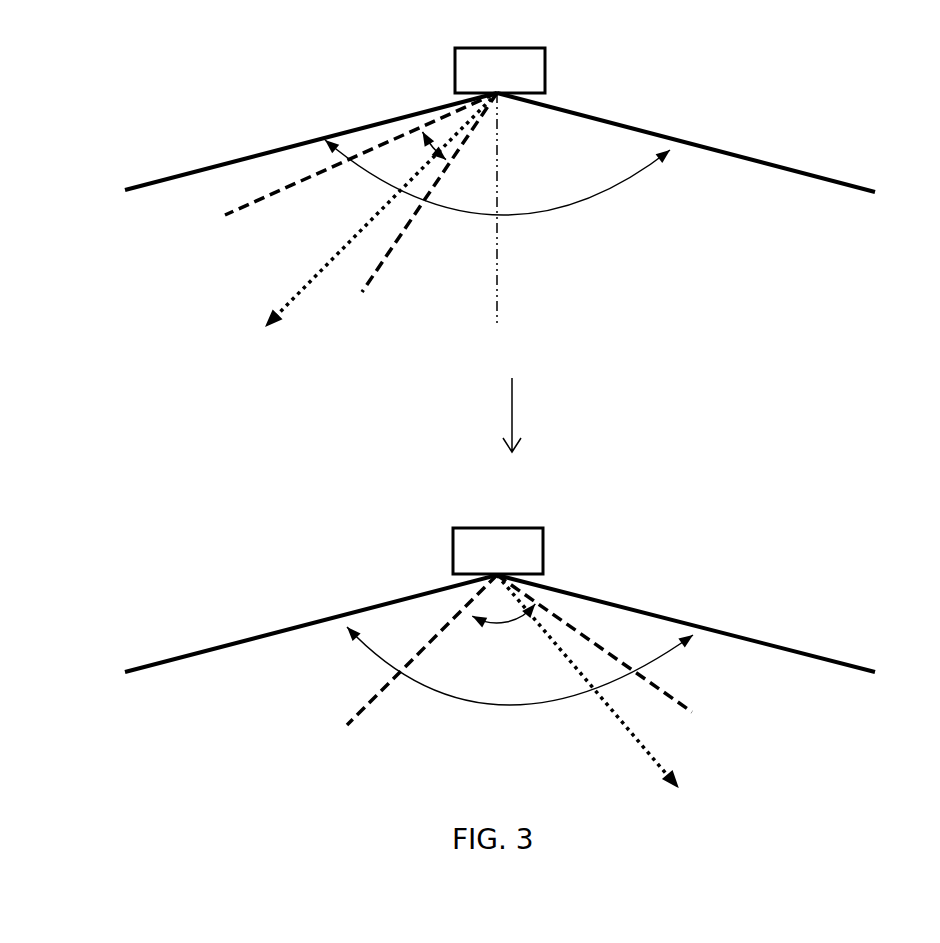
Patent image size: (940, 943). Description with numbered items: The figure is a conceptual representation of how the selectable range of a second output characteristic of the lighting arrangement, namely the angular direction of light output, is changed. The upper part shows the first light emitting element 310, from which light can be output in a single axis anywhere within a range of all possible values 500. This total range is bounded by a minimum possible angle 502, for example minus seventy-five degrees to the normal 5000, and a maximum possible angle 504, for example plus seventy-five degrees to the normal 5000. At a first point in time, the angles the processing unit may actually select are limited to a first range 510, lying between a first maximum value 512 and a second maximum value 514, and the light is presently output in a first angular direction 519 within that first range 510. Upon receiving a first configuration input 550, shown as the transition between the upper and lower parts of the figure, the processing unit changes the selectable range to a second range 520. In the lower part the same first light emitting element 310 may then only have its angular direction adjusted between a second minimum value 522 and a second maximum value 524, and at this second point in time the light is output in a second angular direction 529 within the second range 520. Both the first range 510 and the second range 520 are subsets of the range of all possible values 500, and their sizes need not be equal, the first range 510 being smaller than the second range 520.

The first light emitting element 310 is at (548, 68).
The minimum possible angle 502 is at (175, 173).
The maximum possible angle 504 is at (795, 166).
The range of all possible values 500 is at (634, 178).
The first range 510 is at (415, 160).
The first maximum value 512 is at (272, 196).
The second maximum value 514 is at (383, 258).
The first angular direction 519 is at (290, 302).
The normal 5000 is at (500, 288).
The first configuration input 550 is at (515, 410).
The second range 520 is at (500, 623).
The second minimum value 522 is at (350, 725).
The second maximum value 524 is at (692, 707).
The second angular direction 529 is at (643, 743).